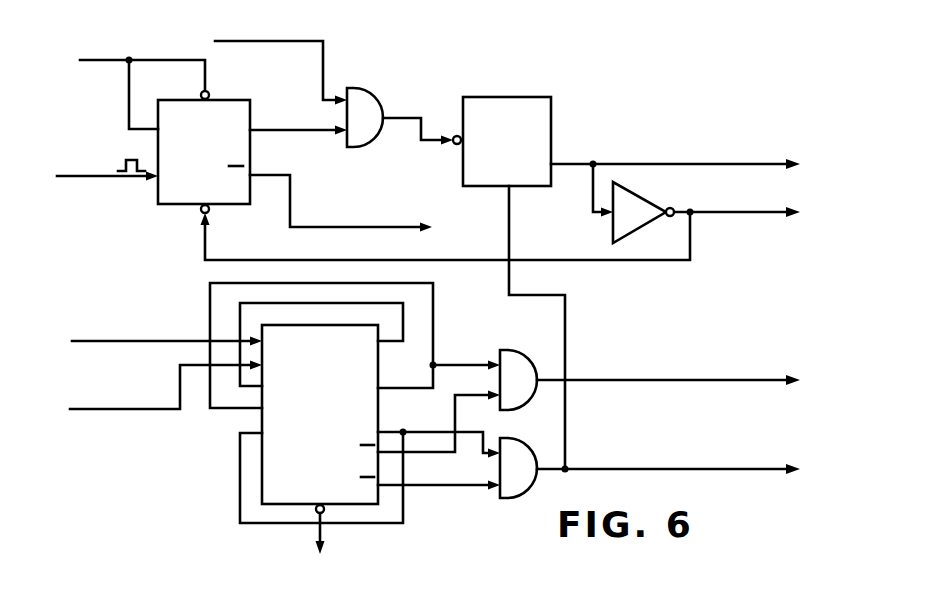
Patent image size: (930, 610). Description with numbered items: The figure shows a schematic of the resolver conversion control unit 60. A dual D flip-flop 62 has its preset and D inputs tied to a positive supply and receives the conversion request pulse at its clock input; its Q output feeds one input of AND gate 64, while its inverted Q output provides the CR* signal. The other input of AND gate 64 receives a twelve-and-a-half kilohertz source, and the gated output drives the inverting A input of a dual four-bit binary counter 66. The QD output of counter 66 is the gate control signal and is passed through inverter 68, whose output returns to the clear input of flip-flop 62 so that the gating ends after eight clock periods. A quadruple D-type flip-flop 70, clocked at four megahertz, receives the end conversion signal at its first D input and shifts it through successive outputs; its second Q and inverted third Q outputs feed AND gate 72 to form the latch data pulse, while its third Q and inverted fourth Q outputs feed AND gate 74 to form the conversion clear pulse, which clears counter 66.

The resolver conversion control unit 60 is at (642, 71).
The dual D flip-flop 62 is at (204, 152).
The AND gate 64 is at (365, 117).
The dual 4 bit binary counter 66 is at (507, 141).
The inverter 68 is at (643, 212).
The quadruple D-type flip-flop 70 is at (320, 419).
The AND gate 72 is at (518, 380).
The AND gate 74 is at (518, 468).